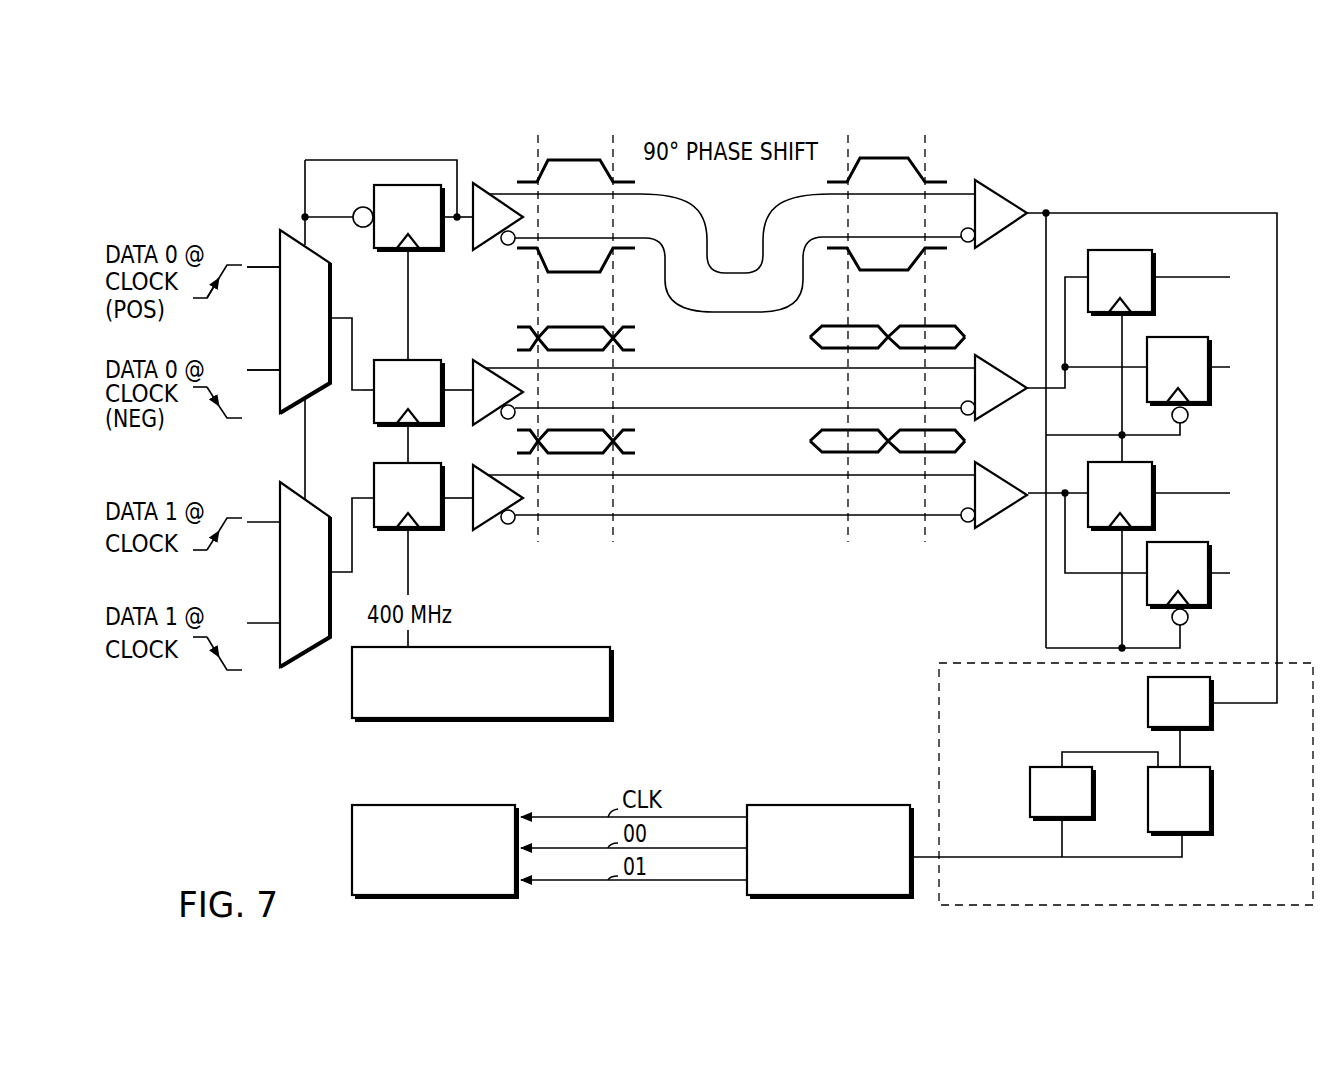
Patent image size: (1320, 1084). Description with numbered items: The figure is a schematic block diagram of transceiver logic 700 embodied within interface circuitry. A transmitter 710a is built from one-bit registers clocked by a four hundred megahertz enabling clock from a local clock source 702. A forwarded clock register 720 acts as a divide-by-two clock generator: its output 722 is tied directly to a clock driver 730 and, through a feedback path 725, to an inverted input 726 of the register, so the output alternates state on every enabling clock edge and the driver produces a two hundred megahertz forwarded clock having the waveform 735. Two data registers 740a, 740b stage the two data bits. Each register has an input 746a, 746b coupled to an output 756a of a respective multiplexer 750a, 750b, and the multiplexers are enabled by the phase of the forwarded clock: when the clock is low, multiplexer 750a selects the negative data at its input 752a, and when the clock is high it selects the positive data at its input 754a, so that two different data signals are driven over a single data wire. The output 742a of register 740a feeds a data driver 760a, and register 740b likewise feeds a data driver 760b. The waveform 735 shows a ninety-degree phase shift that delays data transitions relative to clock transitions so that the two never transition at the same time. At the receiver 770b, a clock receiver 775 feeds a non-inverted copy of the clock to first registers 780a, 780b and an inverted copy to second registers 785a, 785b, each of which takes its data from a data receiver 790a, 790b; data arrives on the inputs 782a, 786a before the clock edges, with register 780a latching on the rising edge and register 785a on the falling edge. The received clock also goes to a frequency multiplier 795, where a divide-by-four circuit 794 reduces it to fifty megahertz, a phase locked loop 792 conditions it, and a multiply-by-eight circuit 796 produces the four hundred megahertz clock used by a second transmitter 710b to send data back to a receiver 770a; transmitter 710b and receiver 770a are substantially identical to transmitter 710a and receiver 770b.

The transceiver logic 700 is at (136, 156).
The transmitter 710a is at (307, 122).
The transmitter 710b is at (829, 851).
The local clock source 702 is at (482, 683).
The forwarded clock register 720 is at (430, 250).
The output 722 is at (463, 222).
The feedback path 725 is at (433, 160).
The inverted input 726 is at (354, 210).
The clock driver 730 is at (493, 183).
The clock signal waveform 735 is at (753, 227).
The data register 740a is at (430, 360).
The data register 740b is at (430, 528).
The flip-flop output line 742a is at (443, 418).
The input 746a is at (374, 405).
The input 746b is at (374, 518).
The multiplexer 750a is at (295, 237).
The multiplexer 750b is at (295, 663).
The negative data input 752a is at (279, 365).
The positive data input 754a is at (278, 278).
The multiplexer output 756a is at (340, 316).
The data driver 760a is at (482, 360).
The data driver 760b is at (482, 531).
The receiver 770a is at (434, 851).
The receiver 770b is at (1090, 117).
The clock receiver 775 is at (988, 182).
The first data register 780a is at (1142, 250).
The first data register 780b is at (1142, 462).
The input 782a is at (1086, 276).
The second data register 785a is at (1203, 338).
The second data register 785b is at (1203, 542).
The input 786a is at (1142, 366).
The data receiver 790a is at (1027, 356).
The data receiver 790b is at (1027, 460).
The phase locked loop circuit 792 is at (1180, 800).
The divide-by-4 circuit 794 is at (1216, 728).
The frequency multiplier circuit 795 is at (1126, 784).
The multiply-by-8 circuit 796 is at (1035, 767).